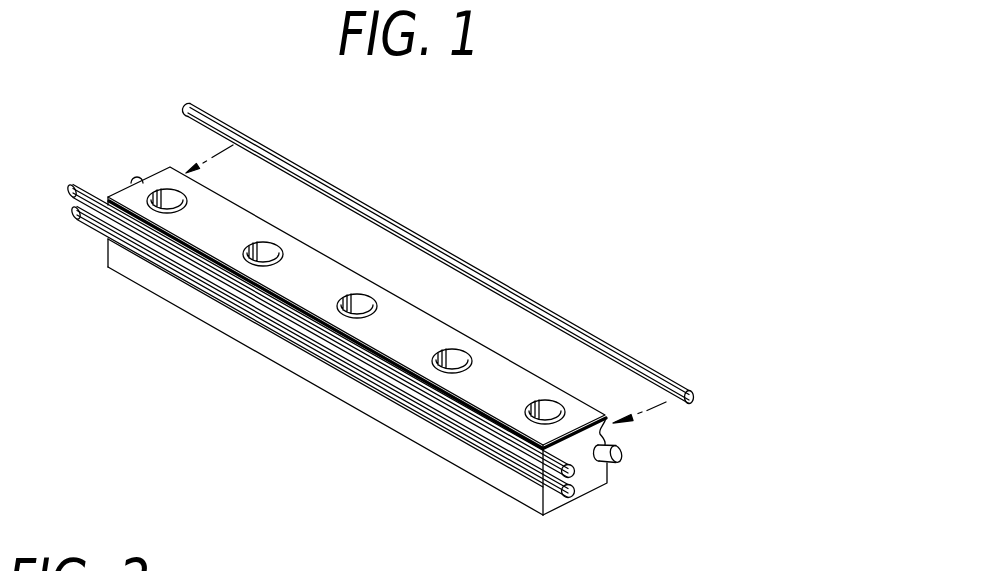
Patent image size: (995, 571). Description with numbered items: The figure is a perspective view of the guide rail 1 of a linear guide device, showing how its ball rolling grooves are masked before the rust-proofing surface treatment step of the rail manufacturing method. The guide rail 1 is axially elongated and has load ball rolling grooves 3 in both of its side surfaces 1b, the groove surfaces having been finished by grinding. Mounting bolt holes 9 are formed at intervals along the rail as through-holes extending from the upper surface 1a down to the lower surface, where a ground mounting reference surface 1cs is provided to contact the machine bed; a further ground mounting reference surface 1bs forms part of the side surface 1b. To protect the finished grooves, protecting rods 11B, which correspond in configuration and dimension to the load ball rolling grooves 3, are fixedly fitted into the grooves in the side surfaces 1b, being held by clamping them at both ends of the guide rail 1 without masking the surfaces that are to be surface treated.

The guide rail 1 is at (123, 196).
The upper surface 1a is at (318, 277).
The side surface 1b is at (270, 352).
The mounting reference surface 1bs is at (393, 417).
The mounting reference surface 1cs is at (552, 508).
The load ball rolling groove 3 is at (607, 418).
The mounting bolt hole 9 is at (461, 355).
The protecting rod 11B is at (568, 493).